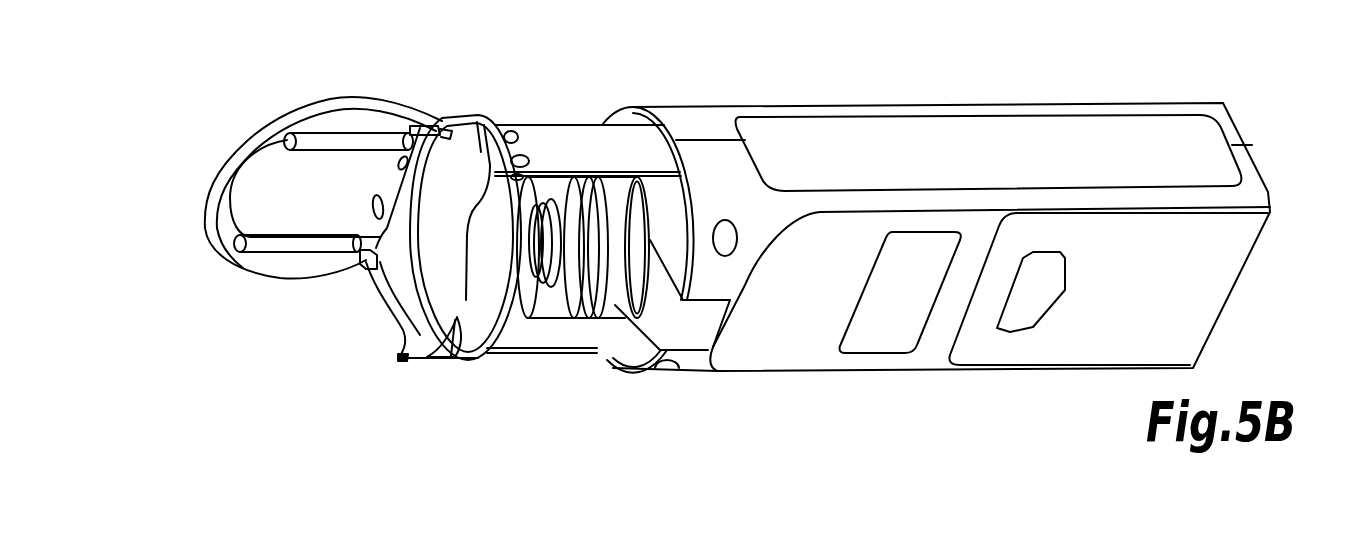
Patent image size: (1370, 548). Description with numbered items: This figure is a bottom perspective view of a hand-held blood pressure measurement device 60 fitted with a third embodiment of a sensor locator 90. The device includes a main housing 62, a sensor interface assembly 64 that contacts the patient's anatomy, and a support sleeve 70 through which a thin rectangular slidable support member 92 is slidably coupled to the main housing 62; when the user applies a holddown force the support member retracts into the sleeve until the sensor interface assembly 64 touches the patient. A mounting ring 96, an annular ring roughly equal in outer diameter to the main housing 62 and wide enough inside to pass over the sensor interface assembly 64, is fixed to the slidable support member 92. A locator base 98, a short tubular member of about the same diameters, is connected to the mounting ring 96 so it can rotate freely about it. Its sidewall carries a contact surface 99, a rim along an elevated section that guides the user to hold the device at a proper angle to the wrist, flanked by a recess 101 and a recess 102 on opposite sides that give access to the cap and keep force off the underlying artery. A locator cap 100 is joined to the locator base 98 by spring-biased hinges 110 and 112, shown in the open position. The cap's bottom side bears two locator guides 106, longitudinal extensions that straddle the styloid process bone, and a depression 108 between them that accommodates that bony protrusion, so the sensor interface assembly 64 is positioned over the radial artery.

The blood pressure measurement device 60 is at (1262, 267).
The main housing 62 is at (1231, 125).
The sensor interface assembly 64 is at (638, 260).
The support sleeve 70 is at (963, 104).
The sensor locator 90 is at (280, 86).
The slidable support member 92 is at (608, 148).
The mounting ring 96 is at (492, 125).
The locator base 98 is at (500, 288).
The contact surface 99 is at (456, 318).
The locator cap 100 is at (307, 108).
The recess 101 is at (476, 118).
The recess 102 is at (405, 320).
The locator guides 106 is at (355, 140).
The depression 108 is at (292, 198).
The hinge 110 is at (417, 125).
The hinge 112 is at (352, 268).